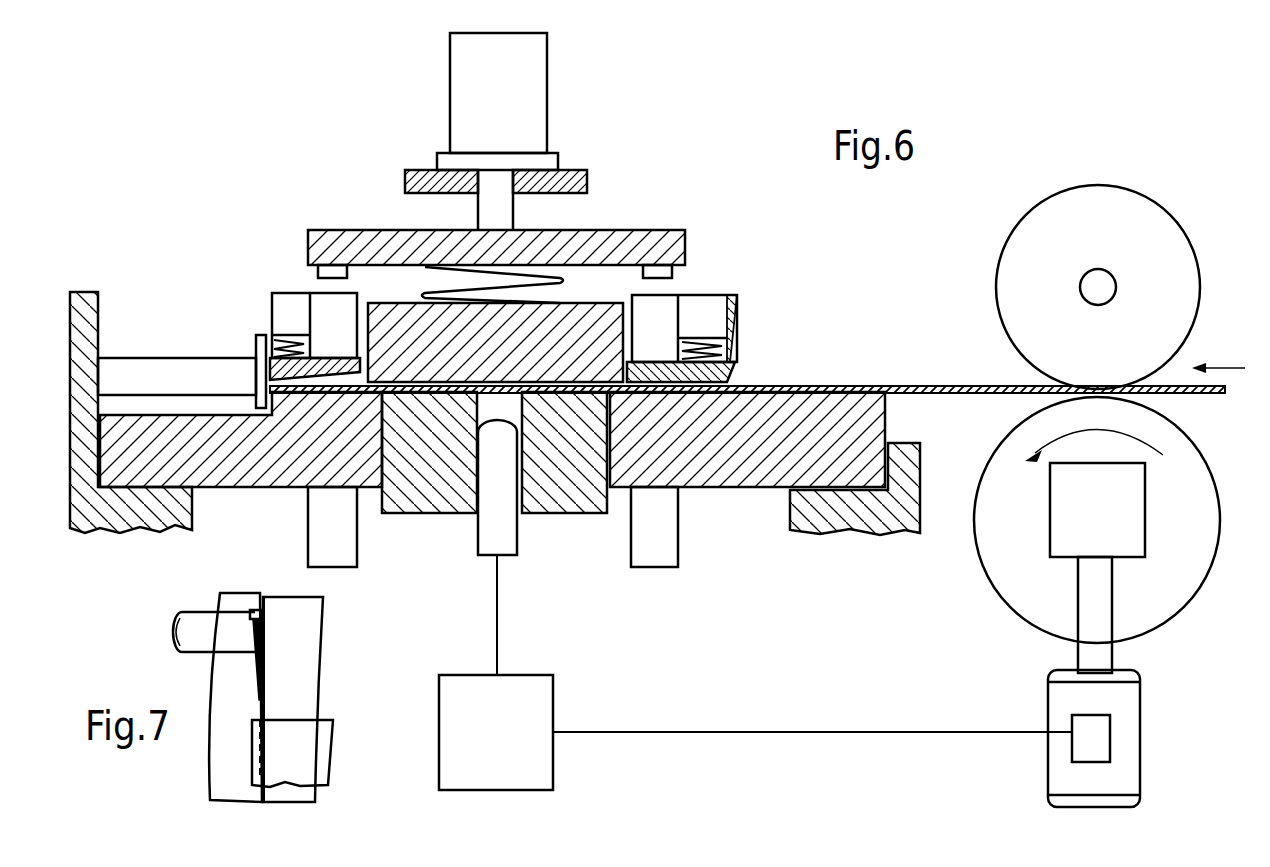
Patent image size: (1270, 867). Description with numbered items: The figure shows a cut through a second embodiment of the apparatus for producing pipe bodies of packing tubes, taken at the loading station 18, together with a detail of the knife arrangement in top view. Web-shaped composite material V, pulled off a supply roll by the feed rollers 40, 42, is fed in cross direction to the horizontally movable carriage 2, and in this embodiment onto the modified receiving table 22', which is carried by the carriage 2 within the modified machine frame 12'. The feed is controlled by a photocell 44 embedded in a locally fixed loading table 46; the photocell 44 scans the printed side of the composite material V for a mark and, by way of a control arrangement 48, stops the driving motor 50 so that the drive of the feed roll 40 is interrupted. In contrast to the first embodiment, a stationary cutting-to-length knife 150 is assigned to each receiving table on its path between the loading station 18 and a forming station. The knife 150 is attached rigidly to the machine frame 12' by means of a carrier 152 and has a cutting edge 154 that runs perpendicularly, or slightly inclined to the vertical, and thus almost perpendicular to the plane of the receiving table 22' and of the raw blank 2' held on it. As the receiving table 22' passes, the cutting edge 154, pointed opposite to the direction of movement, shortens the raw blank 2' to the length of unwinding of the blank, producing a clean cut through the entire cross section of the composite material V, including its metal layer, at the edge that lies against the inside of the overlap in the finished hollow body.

In FIG. 6, the loading station 18 is at (610, 196).
In FIG. 6, the machine frame 12' is at (495, 420).
In FIG. 6, the carrier 152 is at (160, 358).
In FIG. 6, the cutting-to-length knife 150 is at (255, 352).
In FIG. 7, the cutting-to-length knife 150 is at (257, 610).
In FIG. 6, the receiving table 22' is at (713, 299).
In FIG. 6, the composite material V is at (946, 386).
In FIG. 6, the loading table 46 is at (418, 514).
In FIG. 6, the photocell 44 is at (513, 545).
In FIG. 6, the carriage 2 is at (492, 479).
In FIG. 6, the feed roller 42 is at (1022, 232).
In FIG. 6, the feed roll 40 is at (1157, 628).
In FIG. 6, the driving motor 50 is at (1058, 702).
In FIG. 6, the control arrangement 48 is at (540, 747).
In FIG. 7, the cutting edge 154 is at (260, 700).
In FIG. 7, the workpiece block 2' is at (310, 753).